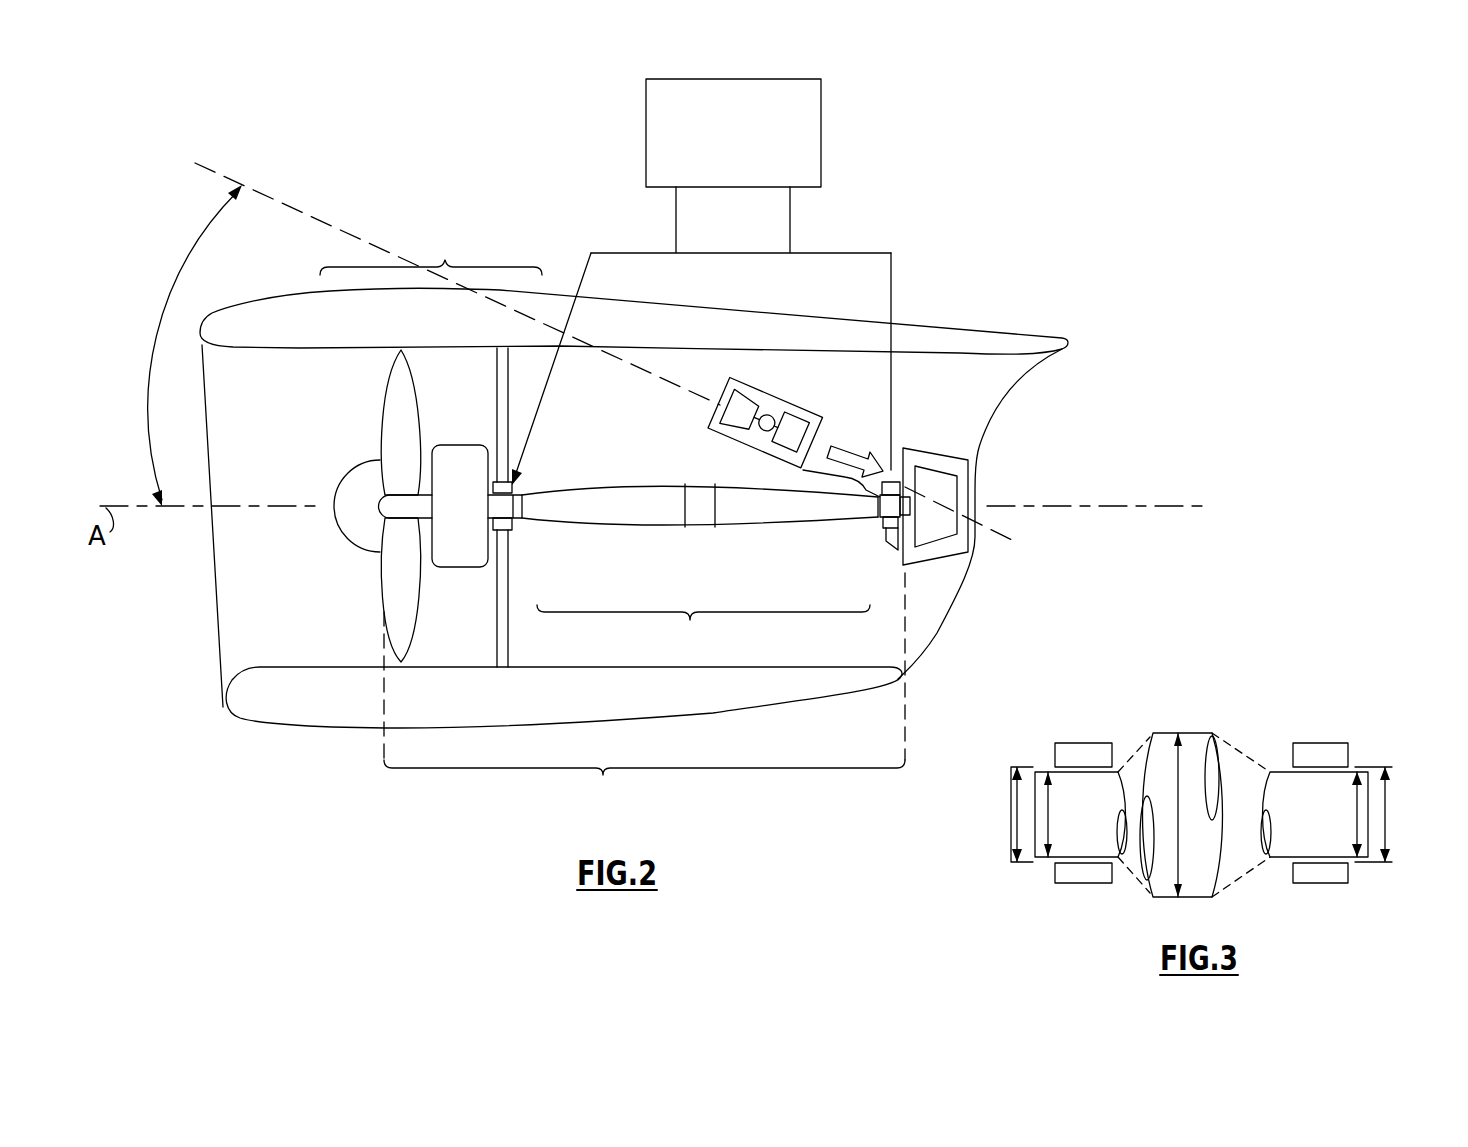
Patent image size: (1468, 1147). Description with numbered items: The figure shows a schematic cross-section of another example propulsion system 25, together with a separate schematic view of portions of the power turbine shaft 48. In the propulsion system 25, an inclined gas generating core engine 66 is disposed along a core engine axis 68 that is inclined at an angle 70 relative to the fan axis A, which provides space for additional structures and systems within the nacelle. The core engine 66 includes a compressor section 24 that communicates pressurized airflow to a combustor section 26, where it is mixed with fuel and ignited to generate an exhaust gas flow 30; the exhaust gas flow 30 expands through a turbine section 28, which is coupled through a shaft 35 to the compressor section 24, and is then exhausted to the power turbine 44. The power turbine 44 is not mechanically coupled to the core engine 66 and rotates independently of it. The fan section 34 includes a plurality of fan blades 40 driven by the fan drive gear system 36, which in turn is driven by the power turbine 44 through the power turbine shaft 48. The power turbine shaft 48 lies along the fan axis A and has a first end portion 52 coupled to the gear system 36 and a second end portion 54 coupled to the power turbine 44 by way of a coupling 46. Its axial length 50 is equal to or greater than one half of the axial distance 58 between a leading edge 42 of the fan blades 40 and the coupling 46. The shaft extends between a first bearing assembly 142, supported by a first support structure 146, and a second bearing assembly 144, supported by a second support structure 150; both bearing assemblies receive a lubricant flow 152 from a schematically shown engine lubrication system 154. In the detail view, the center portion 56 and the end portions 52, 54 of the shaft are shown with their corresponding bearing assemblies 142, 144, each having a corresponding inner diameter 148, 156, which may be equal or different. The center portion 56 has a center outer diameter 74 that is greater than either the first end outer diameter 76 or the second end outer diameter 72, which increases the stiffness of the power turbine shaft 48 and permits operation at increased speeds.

In FIG. 2, the propulsion system 25 is at (649, 449).
In FIG. 2, the compressor section 24 is at (743, 413).
In FIG. 2, the combustor section 26 is at (766, 422).
In FIG. 2, the turbine section 28 is at (788, 431).
In FIG. 2, the exhaust gas flow 30 is at (842, 440).
In FIG. 2, the fan section 34 is at (445, 261).
In FIG. 2, the shaft 35 is at (755, 414).
In FIG. 2, the fan drive gear system 36 is at (476, 519).
In FIG. 2, the fan blades 40 is at (412, 622).
In FIG. 2, the leading edge 42 is at (391, 506).
In FIG. 2, the power turbine 44 is at (964, 526).
In FIG. 2, the coupling 46 is at (968, 523).
In FIG. 2, the power turbine shaft 48 is at (610, 518).
In FIG. 2, the axial length 50 is at (690, 620).
In FIG. 2, the first end portion 52 is at (530, 480).
In FIG. 3, the first end portion 52 is at (1039, 876).
In FIG. 2, the second end portion 54 is at (862, 532).
In FIG. 3, the second end portion 54 is at (1287, 878).
In FIG. 2, the center portion 56 is at (714, 543).
In FIG. 3, the center portion 56 is at (1209, 718).
In FIG. 2, the axial distance 58 is at (603, 775).
In FIG. 2, the inclined gas generating core engine 66 is at (772, 427).
In FIG. 2, the core engine axis 68 is at (296, 208).
In FIG. 2, the angle 70 is at (151, 349).
In FIG. 3, the second end outer diameter 72 is at (1357, 815).
In FIG. 3, the center outer diameter 74 is at (1178, 775).
In FIG. 3, the first end outer diameter 76 is at (1049, 815).
In FIG. 2, the first bearing assembly 142 is at (528, 536).
In FIG. 3, the first bearing assembly 142 is at (1089, 895).
In FIG. 2, the second bearing assembly 144 is at (887, 512).
In FIG. 3, the second bearing assembly 144 is at (1340, 799).
In FIG. 2, the first support structure 146 is at (503, 580).
In FIG. 3, the inner diameter 148 is at (1386, 815).
In FIG. 2, the second support structure 150 is at (893, 545).
In FIG. 2, the lubricant flow 152 is at (790, 228).
In FIG. 2, the engine lubrication system 154 is at (755, 176).
In FIG. 3, the inner diameter 156 is at (1011, 815).